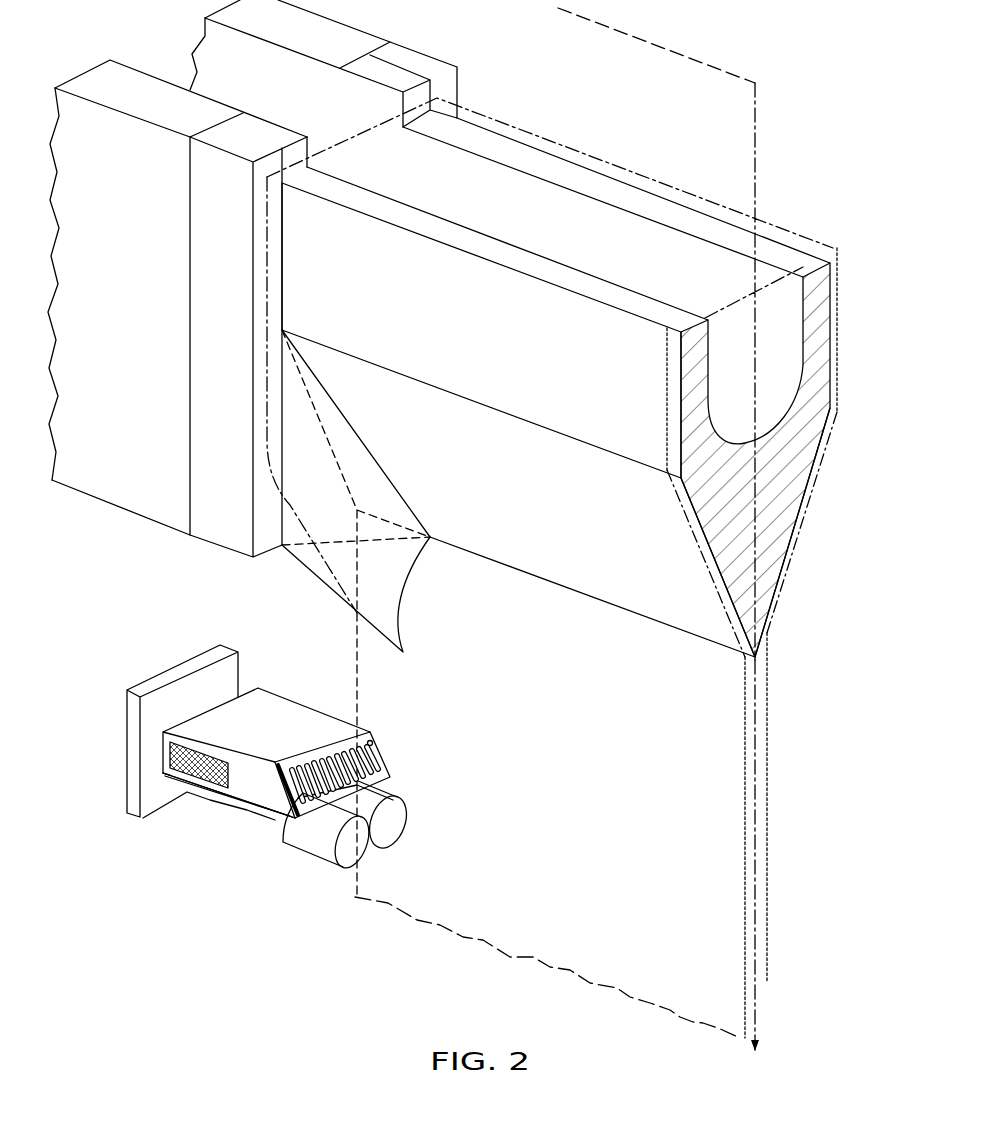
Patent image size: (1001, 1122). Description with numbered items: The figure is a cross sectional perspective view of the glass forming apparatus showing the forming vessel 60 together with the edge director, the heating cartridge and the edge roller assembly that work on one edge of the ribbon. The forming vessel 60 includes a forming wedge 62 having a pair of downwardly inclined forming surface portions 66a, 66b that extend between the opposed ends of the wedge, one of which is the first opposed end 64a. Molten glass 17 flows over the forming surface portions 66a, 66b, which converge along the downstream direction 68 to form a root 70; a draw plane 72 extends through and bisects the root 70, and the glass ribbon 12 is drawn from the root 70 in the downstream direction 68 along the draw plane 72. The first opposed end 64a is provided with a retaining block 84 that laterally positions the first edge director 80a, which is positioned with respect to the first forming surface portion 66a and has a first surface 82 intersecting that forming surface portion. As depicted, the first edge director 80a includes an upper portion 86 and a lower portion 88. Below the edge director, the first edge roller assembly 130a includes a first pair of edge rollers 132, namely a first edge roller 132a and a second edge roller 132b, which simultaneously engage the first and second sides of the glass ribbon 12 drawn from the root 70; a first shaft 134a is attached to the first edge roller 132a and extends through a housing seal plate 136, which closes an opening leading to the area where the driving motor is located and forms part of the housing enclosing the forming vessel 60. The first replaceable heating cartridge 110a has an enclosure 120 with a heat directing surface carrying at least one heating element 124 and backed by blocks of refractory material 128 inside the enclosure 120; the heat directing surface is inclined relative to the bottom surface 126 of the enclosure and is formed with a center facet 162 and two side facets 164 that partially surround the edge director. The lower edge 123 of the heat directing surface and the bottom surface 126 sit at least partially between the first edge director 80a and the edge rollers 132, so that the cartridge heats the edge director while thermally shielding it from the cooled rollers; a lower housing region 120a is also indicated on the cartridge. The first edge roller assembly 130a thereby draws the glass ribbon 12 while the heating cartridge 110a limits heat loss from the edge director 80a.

The glass ribbon 12 is at (627, 996).
The molten glass 17 is at (660, 210).
The forming vessel 60 is at (576, 264).
The forming wedge 62 is at (556, 264).
The first opposed end 64a is at (297, 257).
The first downwardly inclined forming surface portion 66a is at (700, 536).
The second downwardly inclined forming surface portion 66b is at (790, 571).
The downstream direction 68 is at (758, 1032).
The root 70 is at (681, 634).
The draw plane 72 is at (757, 116).
The first edge director 80a is at (511, 537).
The first surface 82 is at (358, 457).
The retaining block 84 is at (76, 466).
The upper portion 86 is at (393, 507).
The lower portion 88 is at (382, 578).
The first replaceable heating cartridge 110a is at (260, 797).
The enclosure 120 is at (263, 765).
The housing bottom 120a is at (152, 835).
The lower edge 123 is at (394, 787).
The heating element 124 is at (332, 747).
The bottom surface 126 is at (223, 797).
The blocks of refractory material 128 is at (178, 758).
The first edge roller assembly 130a is at (368, 880).
The first pair of edge rollers 132 is at (396, 853).
The first edge roller 132a is at (333, 864).
The second edge roller 132b is at (405, 827).
The first shaft 134a is at (196, 792).
The housing seal plate 136 is at (110, 799).
The center facet 162 is at (332, 738).
The side facets 164 is at (397, 716).